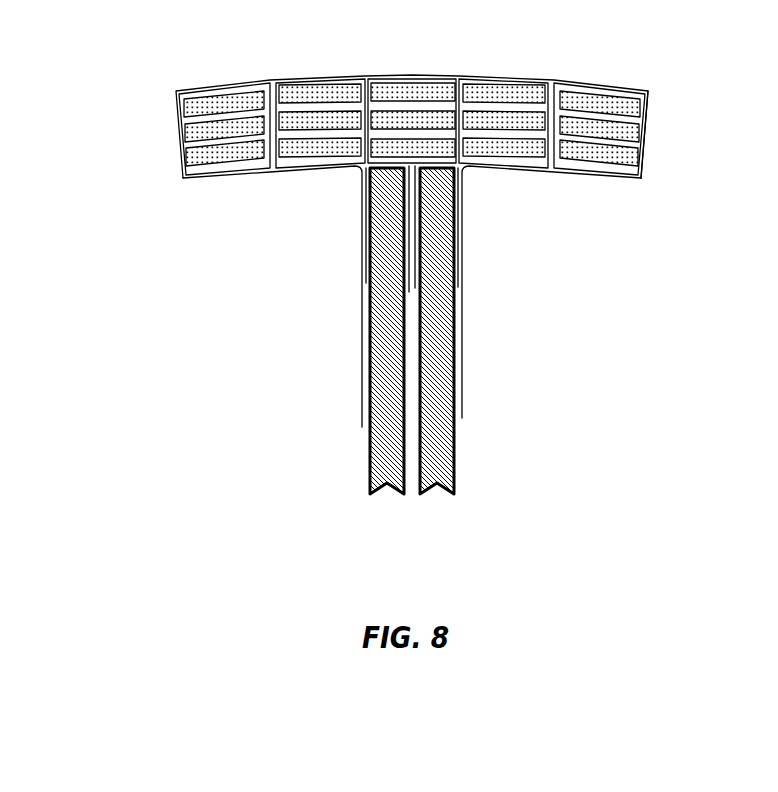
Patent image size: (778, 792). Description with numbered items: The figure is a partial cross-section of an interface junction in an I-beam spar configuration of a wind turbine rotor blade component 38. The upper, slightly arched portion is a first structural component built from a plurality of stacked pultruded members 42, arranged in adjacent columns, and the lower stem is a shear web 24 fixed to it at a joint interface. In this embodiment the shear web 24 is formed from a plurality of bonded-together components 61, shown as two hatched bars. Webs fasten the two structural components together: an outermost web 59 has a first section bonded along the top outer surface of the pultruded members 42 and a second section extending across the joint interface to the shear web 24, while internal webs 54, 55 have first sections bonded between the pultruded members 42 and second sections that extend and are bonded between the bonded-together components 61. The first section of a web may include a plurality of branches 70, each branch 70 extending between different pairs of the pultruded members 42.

The wind turbine rotor blade component 38 is at (120, 82).
The branches 70 is at (333, 110).
The outermost web 59 is at (226, 175).
The pultruded members 42 is at (616, 163).
The web 54 is at (363, 252).
The web 55 is at (409, 273).
The bonded-together components 61 is at (378, 467).
The shear web 24 is at (413, 374).